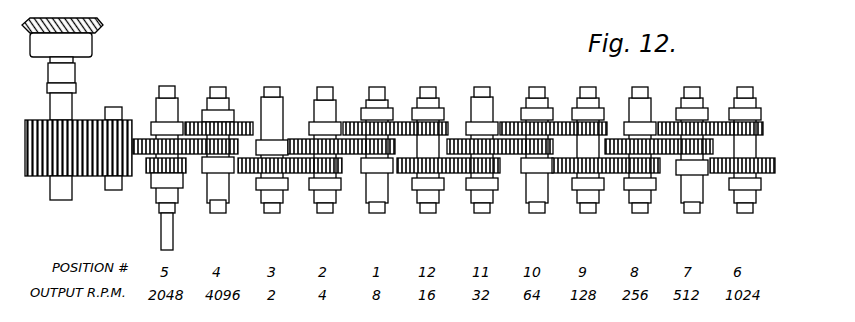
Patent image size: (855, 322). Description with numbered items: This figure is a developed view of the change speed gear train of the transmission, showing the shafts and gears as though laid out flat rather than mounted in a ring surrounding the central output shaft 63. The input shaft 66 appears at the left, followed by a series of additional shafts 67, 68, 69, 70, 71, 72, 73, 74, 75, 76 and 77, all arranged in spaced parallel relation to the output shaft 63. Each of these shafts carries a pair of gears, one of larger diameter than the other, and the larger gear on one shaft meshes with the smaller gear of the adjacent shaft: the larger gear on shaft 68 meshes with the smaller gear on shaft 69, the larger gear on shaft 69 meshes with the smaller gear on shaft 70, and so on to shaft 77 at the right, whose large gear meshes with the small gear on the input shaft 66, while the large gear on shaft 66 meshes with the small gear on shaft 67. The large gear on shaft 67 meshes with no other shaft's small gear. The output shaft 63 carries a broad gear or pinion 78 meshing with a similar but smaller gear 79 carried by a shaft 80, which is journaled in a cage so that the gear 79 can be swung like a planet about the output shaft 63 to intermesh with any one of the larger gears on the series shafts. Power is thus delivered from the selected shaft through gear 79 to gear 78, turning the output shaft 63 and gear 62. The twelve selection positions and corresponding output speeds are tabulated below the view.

The gear 62 is at (98, 30).
The output shaft 63 is at (70, 101).
The shaft 80 is at (118, 105).
The gear or pinion 78 is at (44, 180).
The gear 79 is at (103, 180).
The input shaft 66 is at (162, 238).
The shaft 67 is at (218, 88).
The shaft 68 is at (272, 88).
The shaft 69 is at (325, 88).
The shaft 70 is at (377, 88).
The shaft 71 is at (428, 88).
The shaft 72 is at (482, 88).
The shaft 73 is at (537, 88).
The shaft 74 is at (588, 88).
The shaft 75 is at (640, 88).
The shaft 76 is at (692, 88).
The shaft 77 is at (745, 88).